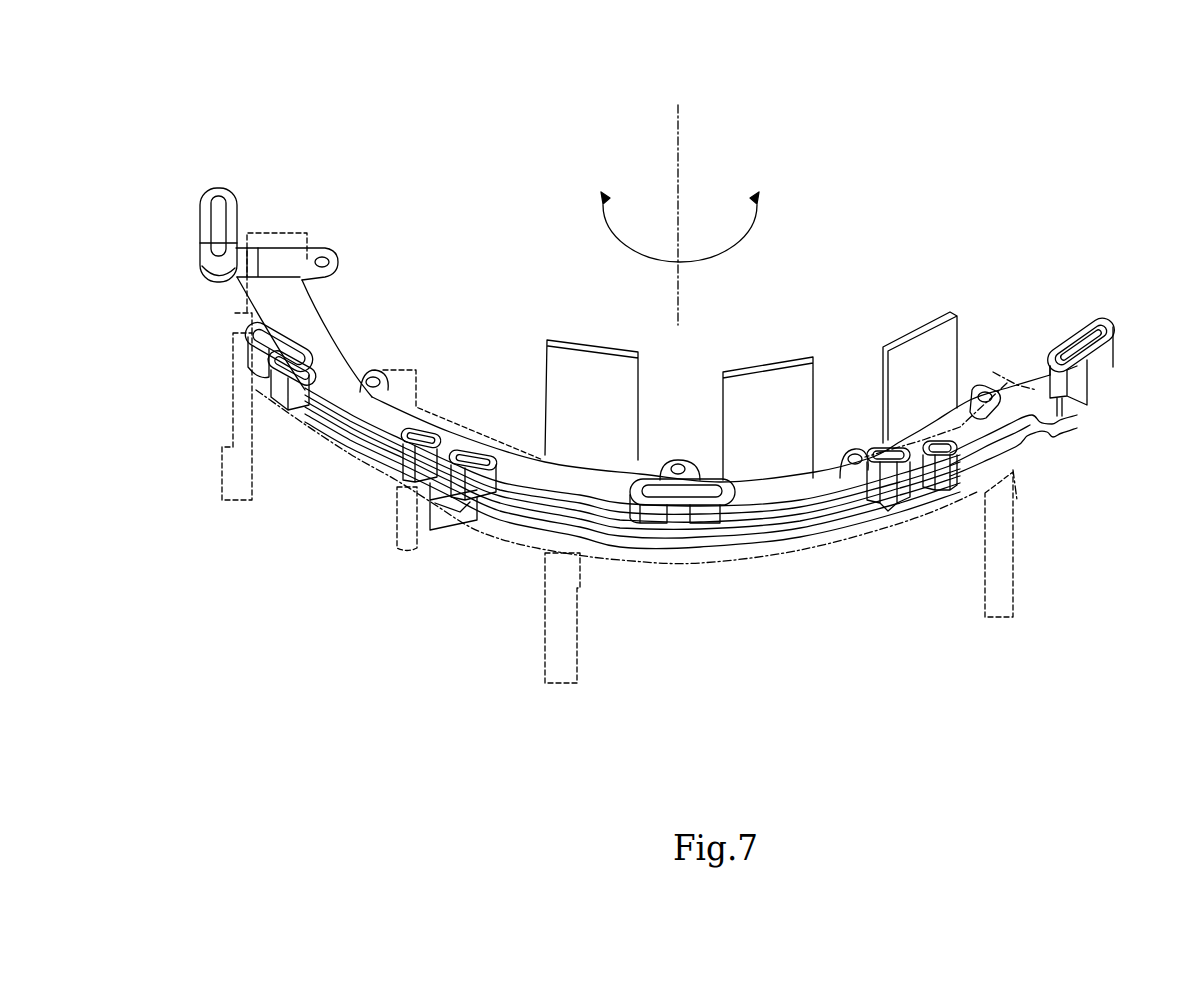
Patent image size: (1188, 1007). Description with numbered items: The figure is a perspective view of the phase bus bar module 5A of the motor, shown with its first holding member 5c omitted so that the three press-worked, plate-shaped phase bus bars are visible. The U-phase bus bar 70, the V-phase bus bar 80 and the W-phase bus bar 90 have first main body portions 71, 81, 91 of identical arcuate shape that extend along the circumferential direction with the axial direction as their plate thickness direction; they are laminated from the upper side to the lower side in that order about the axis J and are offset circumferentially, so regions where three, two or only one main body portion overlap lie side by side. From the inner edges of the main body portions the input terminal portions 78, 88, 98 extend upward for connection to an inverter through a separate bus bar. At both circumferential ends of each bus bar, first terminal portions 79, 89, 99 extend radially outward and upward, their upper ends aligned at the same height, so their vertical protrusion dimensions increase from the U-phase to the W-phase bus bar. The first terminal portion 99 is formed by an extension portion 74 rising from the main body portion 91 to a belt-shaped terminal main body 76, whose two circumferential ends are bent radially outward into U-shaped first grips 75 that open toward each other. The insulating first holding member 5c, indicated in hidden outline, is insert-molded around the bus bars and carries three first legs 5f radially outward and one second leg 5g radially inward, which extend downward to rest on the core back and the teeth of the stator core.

The phase bus bar module 5A is at (897, 130).
The first holding member 5c is at (273, 236).
The first leg 5f is at (222, 478).
The second leg 5g is at (398, 540).
The rotation axis J is at (678, 118).
The U-phase bus bar 70 is at (596, 514).
The first main body portion 71 is at (300, 333).
The extension portion 74 is at (1090, 398).
The first grip 75 is at (1050, 382).
The terminal main body 76 is at (1077, 357).
The input terminal portion 78 is at (590, 347).
The first terminal portion 79 is at (237, 210).
The V-phase bus bar 80 is at (797, 522).
The first main body portion 81 is at (823, 490).
The input terminal portion 88 is at (768, 360).
The first terminal portion 89 is at (307, 387).
The W-phase bus bar 90 is at (987, 471).
The first main body portion 91 is at (1017, 403).
The input terminal portion 98 is at (918, 332).
The first terminal portion 99 is at (453, 507).